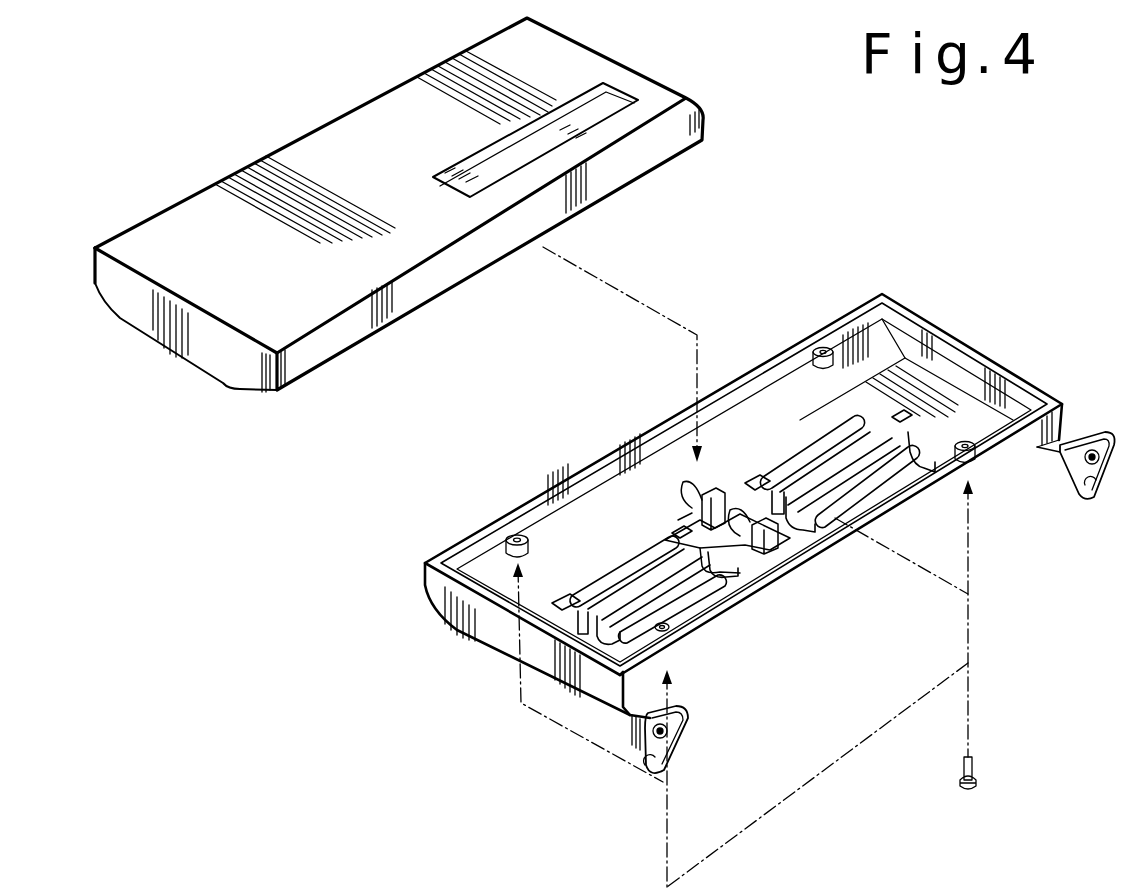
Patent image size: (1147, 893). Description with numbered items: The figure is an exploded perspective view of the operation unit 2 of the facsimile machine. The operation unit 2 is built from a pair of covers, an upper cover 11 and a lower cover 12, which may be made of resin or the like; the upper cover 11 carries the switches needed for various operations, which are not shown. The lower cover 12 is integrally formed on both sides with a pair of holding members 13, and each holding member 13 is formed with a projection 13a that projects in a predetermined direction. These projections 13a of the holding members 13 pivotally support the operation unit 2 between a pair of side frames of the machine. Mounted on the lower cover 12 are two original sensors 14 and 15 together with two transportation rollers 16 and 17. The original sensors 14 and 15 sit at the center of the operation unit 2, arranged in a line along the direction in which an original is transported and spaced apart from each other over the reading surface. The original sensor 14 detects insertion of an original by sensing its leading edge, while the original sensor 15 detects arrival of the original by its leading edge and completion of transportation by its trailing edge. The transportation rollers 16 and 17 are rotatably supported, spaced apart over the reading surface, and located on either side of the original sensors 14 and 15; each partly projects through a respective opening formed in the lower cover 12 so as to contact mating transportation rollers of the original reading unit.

The operation unit 2 is at (327, 116).
The upper cover 11 is at (674, 89).
The lower cover 12 is at (944, 331).
The holding members 13 is at (688, 714).
The projection 13a is at (665, 757).
The original sensor 14 is at (727, 488).
The original sensor 15 is at (784, 532).
The transportation roller 16 is at (620, 571).
The transportation roller 17 is at (700, 598).